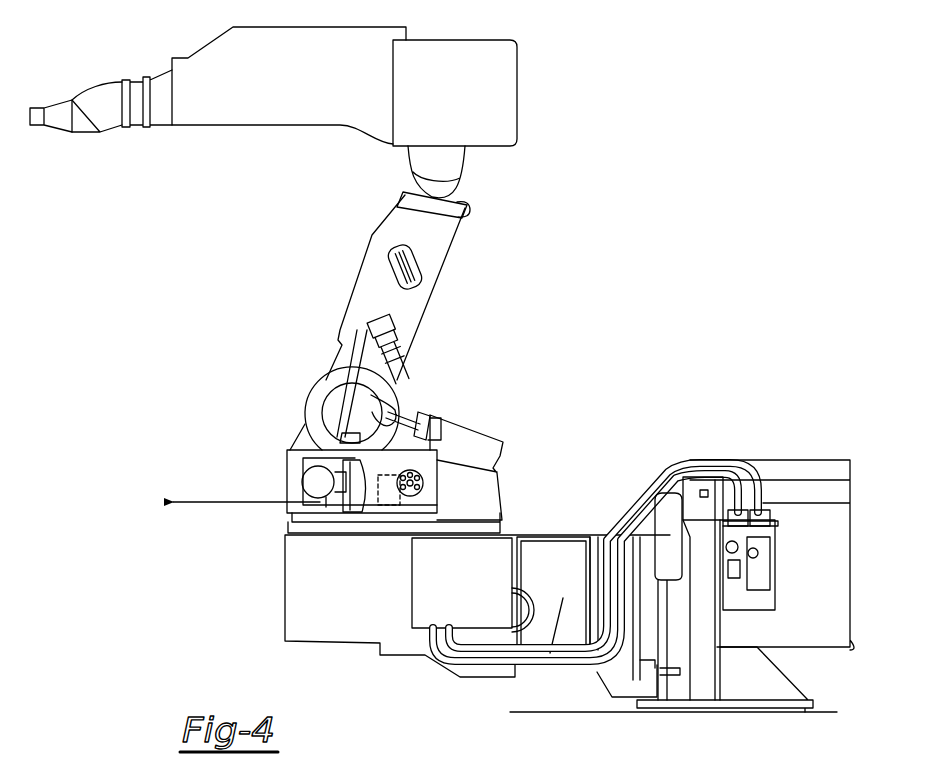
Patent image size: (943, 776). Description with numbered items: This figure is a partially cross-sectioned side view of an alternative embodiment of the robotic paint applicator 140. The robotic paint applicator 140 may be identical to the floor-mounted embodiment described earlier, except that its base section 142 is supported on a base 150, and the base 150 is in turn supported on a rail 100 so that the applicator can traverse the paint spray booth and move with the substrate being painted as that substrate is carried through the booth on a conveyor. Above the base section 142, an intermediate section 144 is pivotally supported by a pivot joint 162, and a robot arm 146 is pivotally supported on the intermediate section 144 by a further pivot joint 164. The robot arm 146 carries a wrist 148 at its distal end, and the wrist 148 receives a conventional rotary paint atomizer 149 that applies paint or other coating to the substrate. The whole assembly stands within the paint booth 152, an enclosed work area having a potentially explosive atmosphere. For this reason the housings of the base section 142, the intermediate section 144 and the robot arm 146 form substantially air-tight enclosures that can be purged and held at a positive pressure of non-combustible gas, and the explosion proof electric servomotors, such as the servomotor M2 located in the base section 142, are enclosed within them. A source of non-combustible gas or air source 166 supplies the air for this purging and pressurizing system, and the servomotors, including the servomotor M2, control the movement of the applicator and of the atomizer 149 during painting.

The robotic paint applicator 140 is at (255, 311).
The base section 142 is at (275, 467).
The intermediate section 144 is at (350, 290).
The robot arm 146 is at (299, 138).
The wrist 148 is at (108, 127).
The rotary paint atomizer 149 is at (58, 132).
The base 150 is at (268, 585).
The paint booth 152 is at (509, 359).
The pivot joint 162 is at (313, 383).
The pivot joint 164 is at (440, 175).
The air source 166 is at (777, 548).
The rail 100 is at (690, 693).
The electric servomotor M2 is at (317, 482).